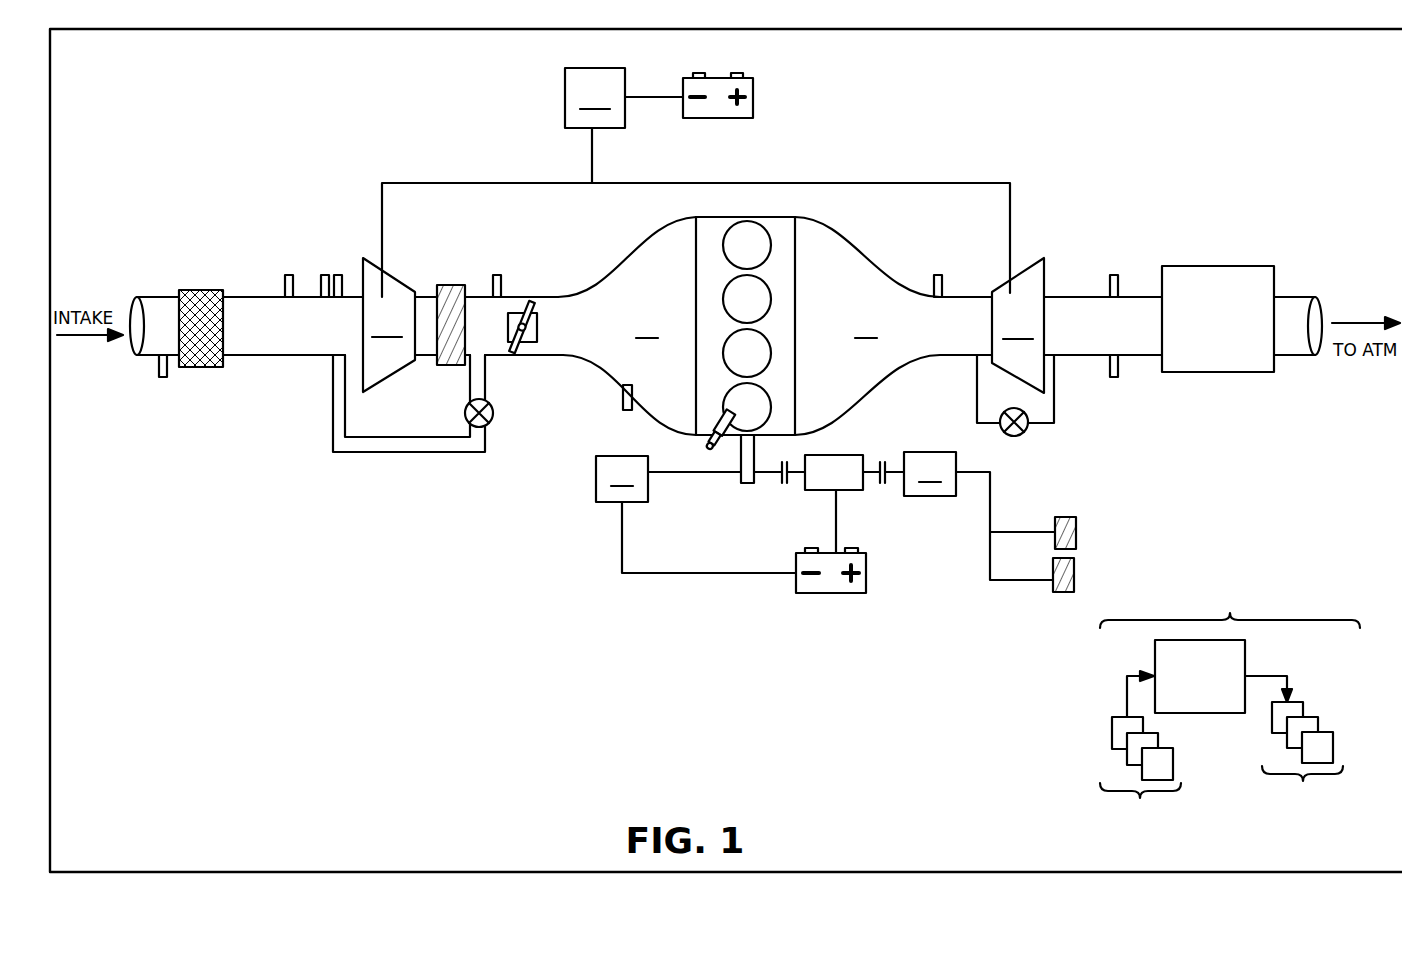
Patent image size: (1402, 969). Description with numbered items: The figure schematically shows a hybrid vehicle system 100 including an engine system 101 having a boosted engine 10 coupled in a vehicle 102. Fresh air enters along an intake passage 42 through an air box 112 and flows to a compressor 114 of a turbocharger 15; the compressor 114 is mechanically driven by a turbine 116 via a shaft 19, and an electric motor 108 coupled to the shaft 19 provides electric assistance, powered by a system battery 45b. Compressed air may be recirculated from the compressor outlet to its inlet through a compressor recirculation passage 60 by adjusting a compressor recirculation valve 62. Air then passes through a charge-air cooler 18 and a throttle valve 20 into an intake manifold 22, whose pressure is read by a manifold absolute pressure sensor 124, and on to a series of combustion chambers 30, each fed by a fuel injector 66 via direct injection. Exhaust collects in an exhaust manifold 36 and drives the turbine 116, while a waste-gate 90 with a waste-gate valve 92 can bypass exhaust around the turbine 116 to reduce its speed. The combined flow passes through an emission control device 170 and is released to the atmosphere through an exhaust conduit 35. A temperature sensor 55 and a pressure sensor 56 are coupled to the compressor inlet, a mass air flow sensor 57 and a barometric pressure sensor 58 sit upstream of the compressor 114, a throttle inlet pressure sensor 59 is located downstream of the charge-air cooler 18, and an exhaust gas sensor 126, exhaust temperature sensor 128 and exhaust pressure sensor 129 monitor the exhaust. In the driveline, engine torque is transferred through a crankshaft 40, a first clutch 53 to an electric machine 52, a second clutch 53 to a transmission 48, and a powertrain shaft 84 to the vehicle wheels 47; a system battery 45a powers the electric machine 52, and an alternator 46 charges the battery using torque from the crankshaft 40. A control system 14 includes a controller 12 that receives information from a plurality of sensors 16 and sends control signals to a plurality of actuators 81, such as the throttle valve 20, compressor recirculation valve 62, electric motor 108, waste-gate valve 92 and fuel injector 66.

The hybrid vehicle system 100 is at (1329, 122).
The engine system 101 is at (1071, 178).
The vehicle 102 is at (1320, 30).
The engine 10 is at (797, 310).
The controller 12 is at (1200, 676).
The control system 14 is at (1230, 707).
The turbocharger 15 is at (426, 222).
The sensors 16 is at (1140, 758).
The charge-air cooler 18 is at (450, 285).
The shaft 19 is at (908, 185).
The throttle valve 20 is at (536, 329).
The intake manifold 22 is at (627, 326).
The combustion chambers 30 is at (770, 243).
The exhaust conduit 35 is at (1298, 297).
The exhaust manifold 36 is at (893, 326).
The crankshaft 40 is at (741, 481).
The intake passage 42 is at (148, 356).
The system battery 45a is at (840, 594).
The system battery 45b is at (720, 119).
The alternator 46 is at (622, 479).
The vehicle wheels 47 is at (1055, 521).
The transmission 48 is at (930, 474).
The electric machine 52 is at (822, 492).
The clutches 53 is at (784, 484).
The temperature sensor 55 is at (325, 275).
The pressure sensor 56 is at (339, 275).
The mass air flow sensor 57 is at (289, 275).
The barometric pressure sensor 58 is at (163, 378).
The throttle inlet pressure sensor 59 is at (497, 275).
The compressor recirculation passage 60 is at (401, 437).
The compressor recirculation valve 62 is at (495, 418).
The fuel injector 66 is at (706, 449).
The actuators 81 is at (1294, 751).
The powertrain shaft 84 is at (968, 478).
The waste-gate 90 is at (977, 405).
The waste-gate valve 92 is at (1023, 435).
The electric motor 108 is at (595, 98).
The air box 112 is at (190, 290).
The compressor 114 is at (389, 325).
The turbine 116 is at (1018, 325).
The manifold absolute pressure sensor 124 is at (622, 395).
The exhaust gas sensor 126 is at (938, 275).
The exhaust temperature sensor 128 is at (1114, 377).
The exhaust pressure sensor 129 is at (1114, 275).
The emission control device 170 is at (1206, 266).